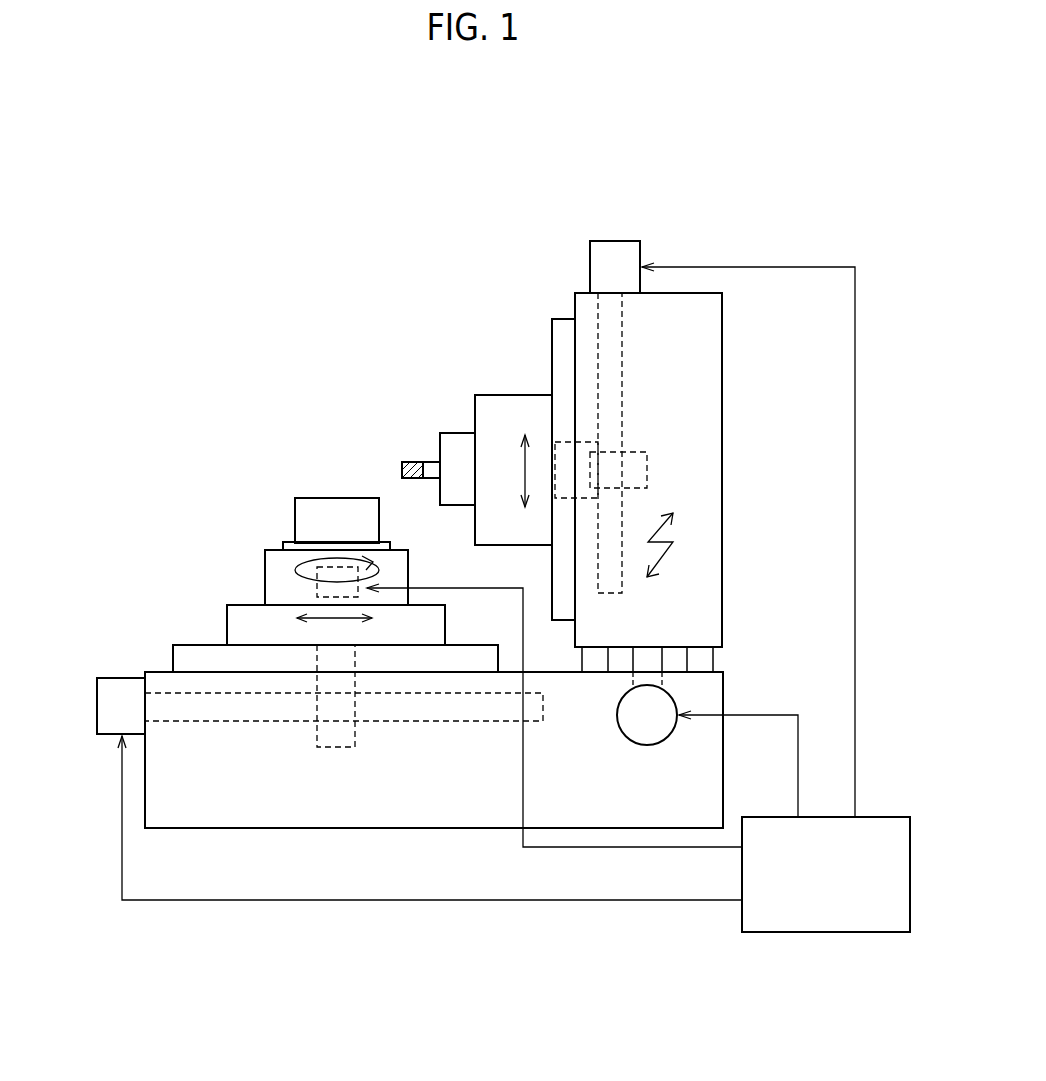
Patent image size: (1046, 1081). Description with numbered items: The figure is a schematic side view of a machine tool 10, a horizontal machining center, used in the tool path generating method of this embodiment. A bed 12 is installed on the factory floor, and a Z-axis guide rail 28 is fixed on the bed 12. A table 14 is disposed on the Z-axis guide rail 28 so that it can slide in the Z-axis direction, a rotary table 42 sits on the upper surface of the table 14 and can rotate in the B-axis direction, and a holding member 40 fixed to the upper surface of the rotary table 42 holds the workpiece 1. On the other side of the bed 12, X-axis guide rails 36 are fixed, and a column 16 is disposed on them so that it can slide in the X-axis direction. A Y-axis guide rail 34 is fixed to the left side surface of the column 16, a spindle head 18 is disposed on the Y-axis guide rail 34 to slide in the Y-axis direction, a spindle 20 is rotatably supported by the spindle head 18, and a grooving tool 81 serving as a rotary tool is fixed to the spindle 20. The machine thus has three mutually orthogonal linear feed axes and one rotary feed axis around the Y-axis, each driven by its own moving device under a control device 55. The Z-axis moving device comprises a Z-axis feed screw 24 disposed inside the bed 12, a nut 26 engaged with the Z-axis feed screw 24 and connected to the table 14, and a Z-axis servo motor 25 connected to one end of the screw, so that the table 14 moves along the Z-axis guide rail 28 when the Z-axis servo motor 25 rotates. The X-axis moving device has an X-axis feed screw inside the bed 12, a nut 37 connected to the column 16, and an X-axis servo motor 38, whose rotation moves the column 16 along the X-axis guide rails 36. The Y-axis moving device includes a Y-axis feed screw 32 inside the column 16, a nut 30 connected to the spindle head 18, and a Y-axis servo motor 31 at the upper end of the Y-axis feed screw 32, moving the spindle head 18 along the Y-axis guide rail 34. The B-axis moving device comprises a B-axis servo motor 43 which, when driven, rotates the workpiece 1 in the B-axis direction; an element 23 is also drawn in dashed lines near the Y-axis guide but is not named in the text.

The workpiece 1 is at (303, 510).
The machine tool 10 is at (355, 348).
The bed 12 is at (395, 810).
The table 14 is at (238, 623).
The column 16 is at (707, 370).
The spindle head 18 is at (495, 395).
The spindle 20 is at (462, 433).
The nut 23 is at (568, 438).
The Z-axis feed screw 24 is at (227, 724).
The Z-axis servo motor 25 is at (125, 678).
The nut 26 is at (353, 745).
The Z-axis guide rail 28 is at (187, 652).
The nut 30 is at (637, 452).
The Y-axis servo motor 31 is at (613, 241).
The Y-axis feed screw 32 is at (622, 340).
The Y-axis guide rail 34 is at (552, 332).
The X-axis guide rails 36 is at (595, 655).
The nut 37 is at (658, 658).
The X-axis servo motor 38 is at (670, 732).
The holding member 40 is at (287, 543).
The rotary table 42 is at (273, 565).
The B-axis servo motor 43 is at (300, 588).
The control device 55 is at (742, 915).
The grooving tool 81 is at (408, 462).